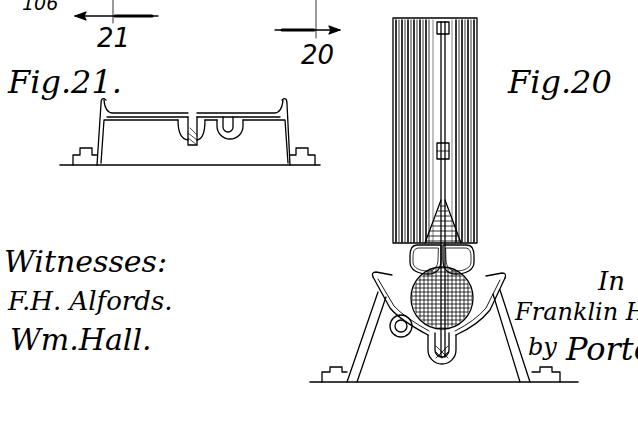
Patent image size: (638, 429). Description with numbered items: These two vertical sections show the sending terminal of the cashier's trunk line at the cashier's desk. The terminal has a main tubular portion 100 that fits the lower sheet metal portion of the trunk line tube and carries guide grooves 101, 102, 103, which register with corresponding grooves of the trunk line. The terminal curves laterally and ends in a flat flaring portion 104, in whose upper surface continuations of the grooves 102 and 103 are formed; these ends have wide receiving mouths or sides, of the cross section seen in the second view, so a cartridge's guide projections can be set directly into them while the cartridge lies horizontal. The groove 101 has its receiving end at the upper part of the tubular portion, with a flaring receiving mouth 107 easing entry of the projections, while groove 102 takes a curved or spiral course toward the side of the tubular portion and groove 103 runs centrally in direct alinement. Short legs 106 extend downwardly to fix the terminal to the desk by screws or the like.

In FIG. 20, the main tubular portion 100 is at (476, 72).
In FIG. 20, the guide groove 101 is at (447, 118).
In FIG. 21, the guide groove 102 is at (230, 114).
In FIG. 20, the guide groove 102 is at (398, 336).
In FIG. 21, the guide groove 103 is at (192, 114).
In FIG. 20, the guide groove 103 is at (457, 341).
In FIG. 21, the flat flaring portion 104 is at (137, 106).
In FIG. 20, the flat flaring portion 104 is at (382, 293).
In FIG. 21, the short legs 106 is at (101, 133).
In FIG. 20, the short legs 106 is at (358, 340).
In FIG. 20, the flaring receiving mouth 107 is at (472, 250).